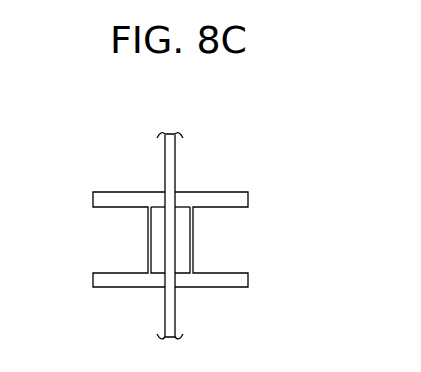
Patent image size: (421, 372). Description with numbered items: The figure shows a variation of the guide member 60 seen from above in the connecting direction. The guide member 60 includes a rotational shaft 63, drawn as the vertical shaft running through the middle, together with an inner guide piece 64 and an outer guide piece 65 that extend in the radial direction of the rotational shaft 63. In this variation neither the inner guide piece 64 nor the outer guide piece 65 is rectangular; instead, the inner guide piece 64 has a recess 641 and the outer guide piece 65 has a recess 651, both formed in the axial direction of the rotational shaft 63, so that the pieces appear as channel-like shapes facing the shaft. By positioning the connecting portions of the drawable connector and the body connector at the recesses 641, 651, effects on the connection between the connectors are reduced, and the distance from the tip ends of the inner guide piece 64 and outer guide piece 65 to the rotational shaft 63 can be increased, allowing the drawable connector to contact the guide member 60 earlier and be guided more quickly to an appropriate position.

The guide member 60 is at (177, 214).
The rotational shaft 63 is at (172, 172).
The inner guide piece 64 is at (108, 280).
The recess 641 is at (129, 245).
The outer guide piece 65 is at (240, 280).
The recess 651 is at (210, 238).